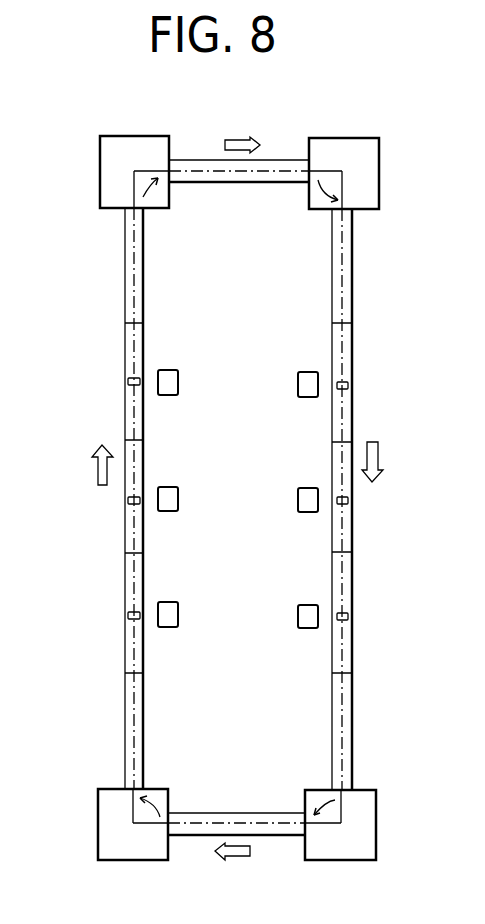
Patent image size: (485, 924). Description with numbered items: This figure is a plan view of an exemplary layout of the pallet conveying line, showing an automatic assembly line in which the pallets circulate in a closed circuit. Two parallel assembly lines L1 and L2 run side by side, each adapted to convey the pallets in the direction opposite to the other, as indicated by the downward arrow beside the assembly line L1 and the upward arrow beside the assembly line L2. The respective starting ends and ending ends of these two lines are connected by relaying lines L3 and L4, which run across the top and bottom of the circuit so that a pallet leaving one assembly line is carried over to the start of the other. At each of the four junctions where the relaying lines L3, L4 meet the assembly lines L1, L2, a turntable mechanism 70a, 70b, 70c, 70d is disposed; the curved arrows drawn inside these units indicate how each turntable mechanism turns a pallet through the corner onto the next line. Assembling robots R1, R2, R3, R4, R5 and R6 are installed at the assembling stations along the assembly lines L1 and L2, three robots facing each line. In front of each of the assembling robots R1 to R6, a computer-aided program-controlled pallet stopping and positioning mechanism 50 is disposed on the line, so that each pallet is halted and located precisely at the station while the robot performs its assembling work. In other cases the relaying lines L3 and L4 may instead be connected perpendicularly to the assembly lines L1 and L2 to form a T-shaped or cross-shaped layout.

The turntable mechanism 70a is at (365, 805).
The turntable mechanism 70b is at (100, 797).
The turntable mechanism 70c is at (128, 148).
The turntable mechanism 70d is at (340, 148).
The pallet stopping and positioning mechanism 50 is at (128, 380).
The assembly line L1 is at (352, 428).
The assembly line L2 is at (125, 425).
The relaying line L3 is at (226, 813).
The relaying line L4 is at (232, 182).
The assembling robot R1 is at (298, 385).
The assembling robot R2 is at (298, 500).
The assembling robot R3 is at (298, 615).
The assembling robot R4 is at (178, 613).
The assembling robot R5 is at (178, 498).
The assembling robot R6 is at (178, 383).